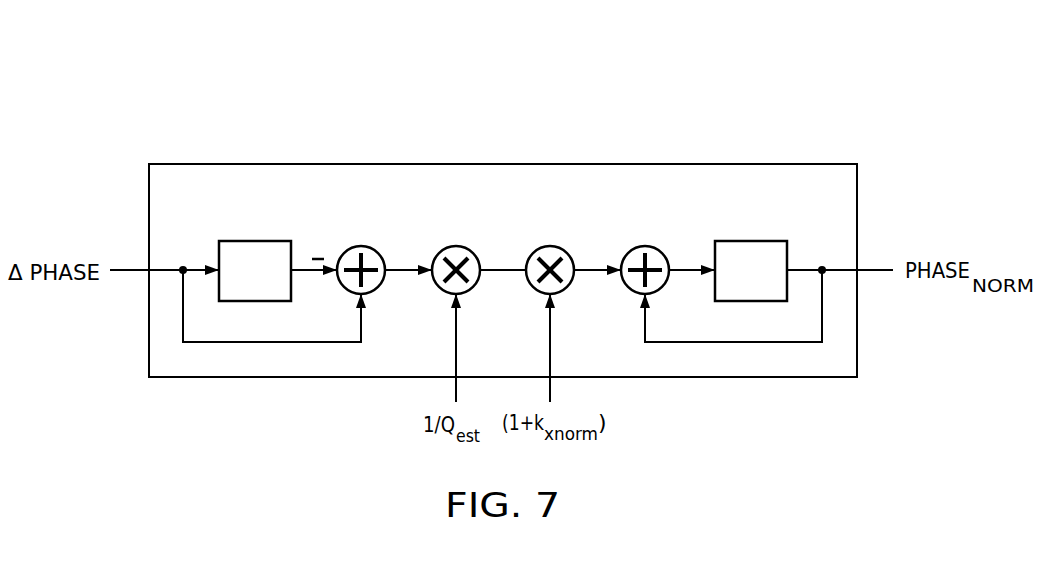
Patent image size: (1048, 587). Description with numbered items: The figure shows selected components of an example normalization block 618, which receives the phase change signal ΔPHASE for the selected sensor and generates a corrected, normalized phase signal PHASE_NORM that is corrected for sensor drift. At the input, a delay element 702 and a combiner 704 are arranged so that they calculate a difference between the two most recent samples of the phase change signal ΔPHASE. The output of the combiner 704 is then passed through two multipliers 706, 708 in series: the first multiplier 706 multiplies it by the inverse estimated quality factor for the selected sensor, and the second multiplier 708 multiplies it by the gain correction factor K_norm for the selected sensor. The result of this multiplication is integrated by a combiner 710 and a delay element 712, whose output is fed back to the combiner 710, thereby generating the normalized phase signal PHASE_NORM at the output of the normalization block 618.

The normalization block 618 is at (356, 86).
The delay element 702 is at (255, 240).
The combiner 704 is at (345, 253).
The multiplier 706 is at (440, 253).
The multiplier 708 is at (565, 253).
The combiner 710 is at (660, 253).
The delay element 712 is at (752, 240).